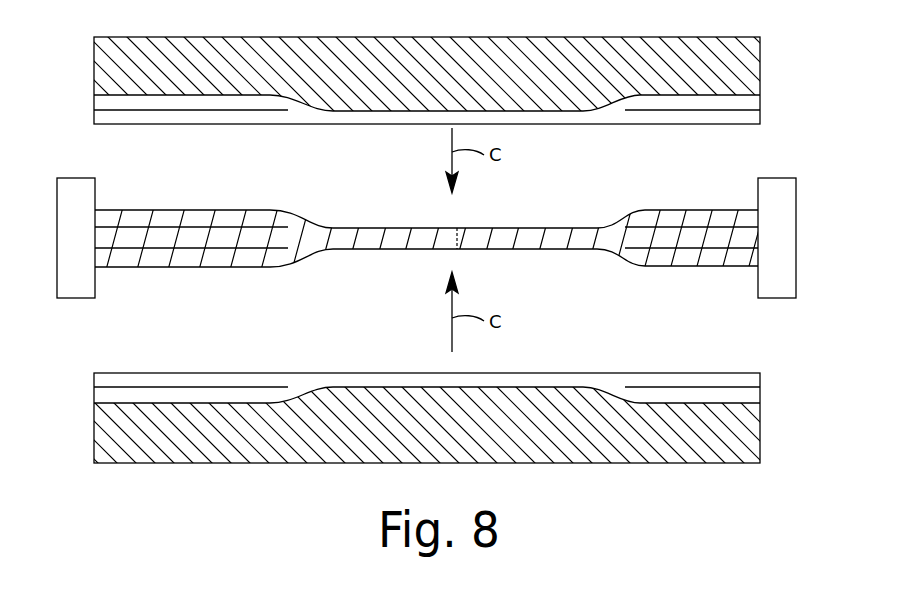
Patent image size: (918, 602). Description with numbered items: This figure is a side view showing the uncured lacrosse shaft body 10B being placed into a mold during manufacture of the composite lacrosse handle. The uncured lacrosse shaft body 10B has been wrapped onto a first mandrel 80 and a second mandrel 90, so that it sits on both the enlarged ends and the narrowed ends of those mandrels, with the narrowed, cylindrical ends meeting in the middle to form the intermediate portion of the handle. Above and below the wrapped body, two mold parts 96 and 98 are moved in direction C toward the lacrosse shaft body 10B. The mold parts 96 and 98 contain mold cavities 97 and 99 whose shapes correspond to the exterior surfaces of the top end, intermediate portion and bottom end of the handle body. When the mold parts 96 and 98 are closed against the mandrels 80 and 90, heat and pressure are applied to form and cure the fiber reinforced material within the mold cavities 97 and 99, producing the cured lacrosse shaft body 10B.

The mold part 96 is at (760, 65).
The mold cavity 97 is at (687, 116).
The mold part 98 is at (760, 425).
The mold cavity 99 is at (695, 382).
The first mandrel 80 is at (78, 298).
The second mandrel 90 is at (771, 298).
The lacrosse shaft body 10B is at (290, 218).